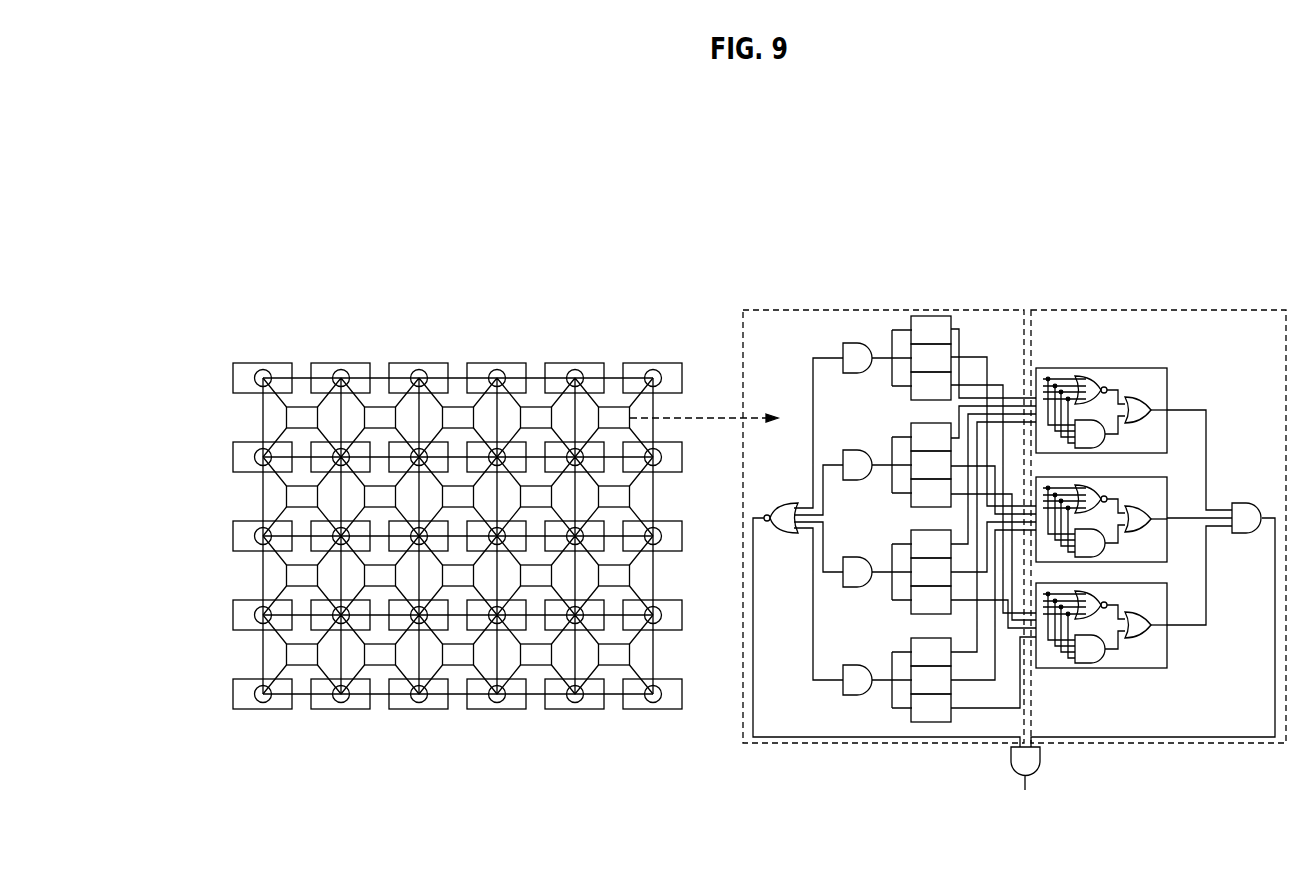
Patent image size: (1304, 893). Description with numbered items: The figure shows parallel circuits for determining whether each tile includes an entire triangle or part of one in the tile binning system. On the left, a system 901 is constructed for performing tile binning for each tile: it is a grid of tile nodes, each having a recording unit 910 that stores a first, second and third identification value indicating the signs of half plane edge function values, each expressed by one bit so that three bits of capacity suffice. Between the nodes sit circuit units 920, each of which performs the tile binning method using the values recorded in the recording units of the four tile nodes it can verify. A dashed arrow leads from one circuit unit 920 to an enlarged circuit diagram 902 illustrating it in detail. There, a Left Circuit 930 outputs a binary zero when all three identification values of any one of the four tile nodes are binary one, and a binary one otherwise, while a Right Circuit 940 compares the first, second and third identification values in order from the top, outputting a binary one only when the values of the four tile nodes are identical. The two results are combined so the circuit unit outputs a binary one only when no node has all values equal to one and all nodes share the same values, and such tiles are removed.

The system 901 is at (457, 571).
The recording unit 910 is at (572, 362).
The circuit unit 920 is at (612, 407).
The Left Circuit 930 is at (882, 309).
The Right Circuit 940 is at (1159, 309).
The enlarged circuit diagram 902 is at (1029, 788).